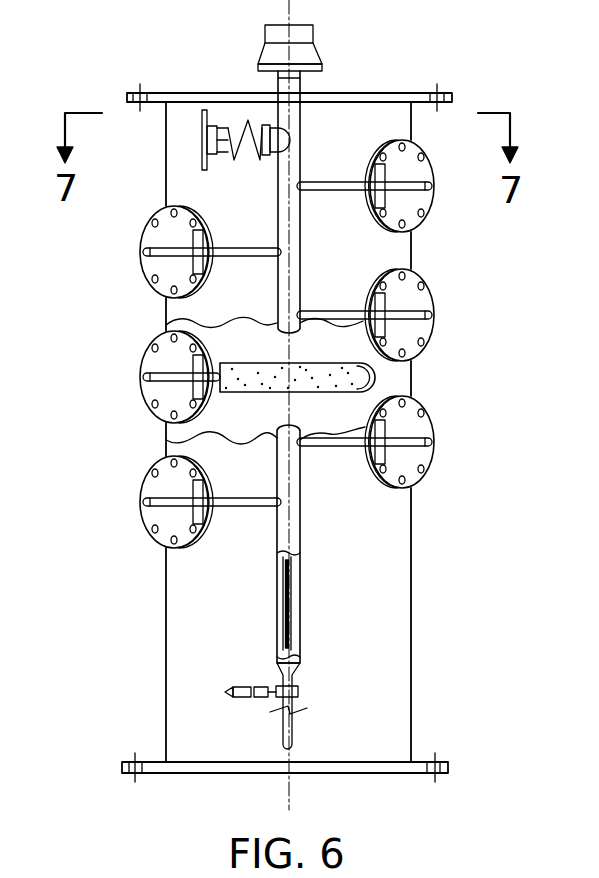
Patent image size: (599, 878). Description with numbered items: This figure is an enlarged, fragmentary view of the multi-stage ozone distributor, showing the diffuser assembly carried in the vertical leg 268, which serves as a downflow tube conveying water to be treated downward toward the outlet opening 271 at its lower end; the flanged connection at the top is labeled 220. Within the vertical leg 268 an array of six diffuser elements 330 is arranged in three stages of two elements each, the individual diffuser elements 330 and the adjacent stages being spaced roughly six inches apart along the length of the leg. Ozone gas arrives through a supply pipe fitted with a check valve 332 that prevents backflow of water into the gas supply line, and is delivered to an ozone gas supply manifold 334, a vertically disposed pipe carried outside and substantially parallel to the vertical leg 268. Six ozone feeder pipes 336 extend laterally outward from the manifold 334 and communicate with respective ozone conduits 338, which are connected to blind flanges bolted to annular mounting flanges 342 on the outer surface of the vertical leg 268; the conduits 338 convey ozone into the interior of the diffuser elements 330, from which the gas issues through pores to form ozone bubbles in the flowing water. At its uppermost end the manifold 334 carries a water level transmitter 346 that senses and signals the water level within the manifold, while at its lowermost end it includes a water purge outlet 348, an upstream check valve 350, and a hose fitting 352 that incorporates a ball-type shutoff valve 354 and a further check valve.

The top flange 220 is at (397, 96).
The vertical leg 268 is at (406, 603).
The outlet opening 271 is at (376, 775).
The diffuser element 330 is at (380, 377).
The check valve 332 is at (245, 122).
The ozone gas supply manifold 334 is at (278, 194).
The ozone feeder pipe 336 is at (245, 258).
The ozone conduit 338 is at (140, 257).
The annular mounting flange 342 is at (198, 142).
The water level transmitter 346 is at (312, 34).
The water purge outlet 348 is at (292, 745).
The upstream check valve 350 is at (293, 693).
The hose fitting 352 is at (238, 688).
The ball-type shutoff valve 354 is at (258, 697).